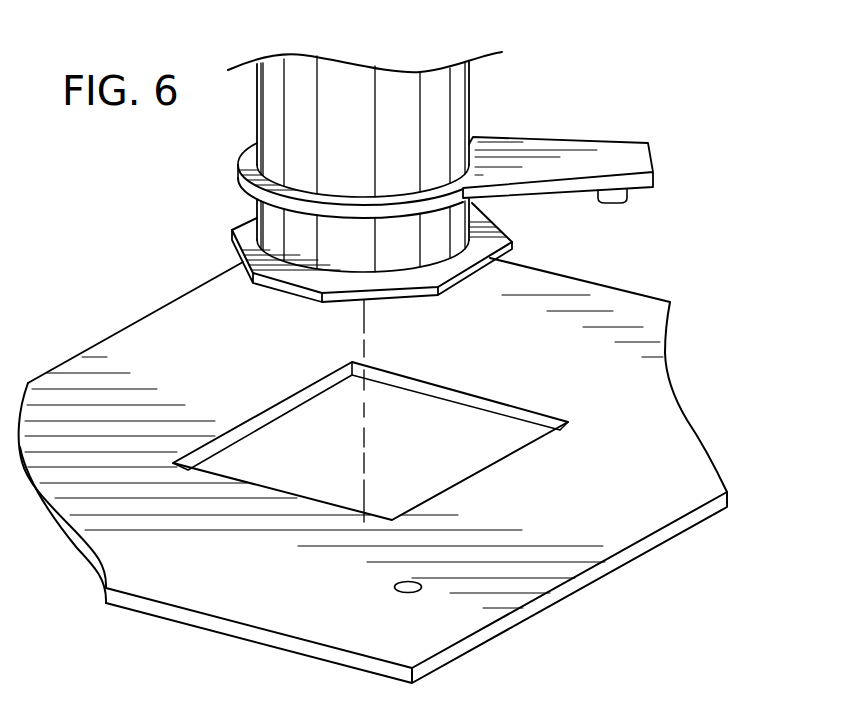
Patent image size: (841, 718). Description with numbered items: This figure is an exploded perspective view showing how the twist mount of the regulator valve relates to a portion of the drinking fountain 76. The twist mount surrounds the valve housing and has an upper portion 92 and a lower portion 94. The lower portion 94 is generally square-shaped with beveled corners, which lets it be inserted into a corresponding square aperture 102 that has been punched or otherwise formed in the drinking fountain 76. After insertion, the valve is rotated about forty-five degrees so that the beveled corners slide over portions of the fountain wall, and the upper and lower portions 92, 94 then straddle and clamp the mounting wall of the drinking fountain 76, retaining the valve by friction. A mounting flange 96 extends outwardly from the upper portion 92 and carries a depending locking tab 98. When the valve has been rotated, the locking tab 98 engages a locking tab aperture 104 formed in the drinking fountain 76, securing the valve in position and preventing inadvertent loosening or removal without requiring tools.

The drinking fountain 76 is at (157, 340).
The upper portion 92 is at (245, 148).
The lower portion 94 is at (235, 227).
The mounting flange 96 is at (570, 157).
The locking tab 98 is at (628, 194).
The square aperture 102 is at (318, 430).
The locking tab aperture 104 is at (408, 586).